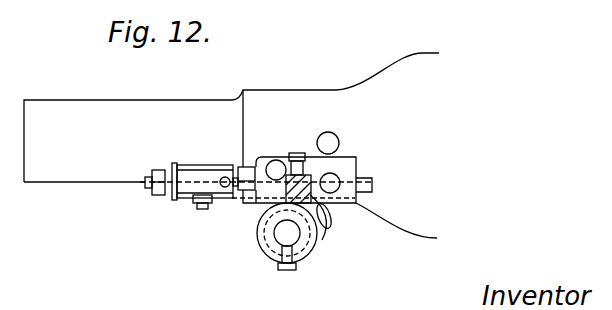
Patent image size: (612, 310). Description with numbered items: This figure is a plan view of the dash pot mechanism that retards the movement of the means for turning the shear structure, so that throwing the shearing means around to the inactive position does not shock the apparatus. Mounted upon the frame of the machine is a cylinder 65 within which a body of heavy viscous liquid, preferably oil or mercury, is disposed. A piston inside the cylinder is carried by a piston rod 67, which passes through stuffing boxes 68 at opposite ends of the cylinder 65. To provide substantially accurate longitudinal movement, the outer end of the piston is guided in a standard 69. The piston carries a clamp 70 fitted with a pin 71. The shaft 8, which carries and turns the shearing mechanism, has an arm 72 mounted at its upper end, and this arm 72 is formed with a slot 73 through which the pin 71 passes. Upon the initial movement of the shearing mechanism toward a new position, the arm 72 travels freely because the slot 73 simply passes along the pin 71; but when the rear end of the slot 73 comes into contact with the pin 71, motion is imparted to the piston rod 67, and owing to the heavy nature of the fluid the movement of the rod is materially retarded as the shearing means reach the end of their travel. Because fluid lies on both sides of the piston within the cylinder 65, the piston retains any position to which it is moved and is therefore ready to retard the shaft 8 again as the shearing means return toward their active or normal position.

The shaft 8 is at (284, 236).
The cylinder 65 is at (193, 201).
The piston rod 67 is at (372, 183).
The stuffing boxes 68 is at (157, 172).
The standard 69 is at (333, 178).
The clamp 70 is at (295, 152).
The pin 71 is at (288, 198).
The arm 72 is at (323, 239).
The slot 73 is at (337, 216).